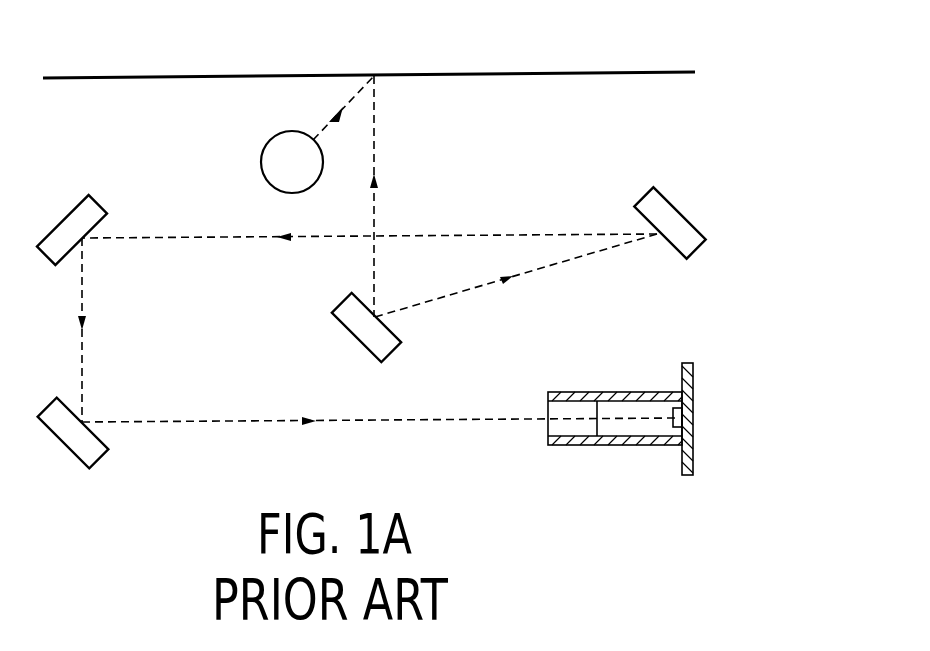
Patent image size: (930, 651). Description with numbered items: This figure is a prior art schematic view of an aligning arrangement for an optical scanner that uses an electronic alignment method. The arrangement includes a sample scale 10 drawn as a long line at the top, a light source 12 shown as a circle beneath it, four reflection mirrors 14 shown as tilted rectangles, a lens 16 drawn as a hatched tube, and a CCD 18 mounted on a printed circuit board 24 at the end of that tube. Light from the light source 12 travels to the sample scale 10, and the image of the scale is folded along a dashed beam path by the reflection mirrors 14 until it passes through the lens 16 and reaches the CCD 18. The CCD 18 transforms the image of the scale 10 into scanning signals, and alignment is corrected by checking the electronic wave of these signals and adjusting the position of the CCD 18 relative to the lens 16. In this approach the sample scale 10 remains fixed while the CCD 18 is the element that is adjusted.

The sample scale 10 is at (593, 73).
The light source 12 is at (268, 162).
The reflection mirror 14 is at (357, 330).
The lens 16 is at (553, 423).
The CCD 18 is at (672, 419).
The printed circuit board 24 is at (688, 474).